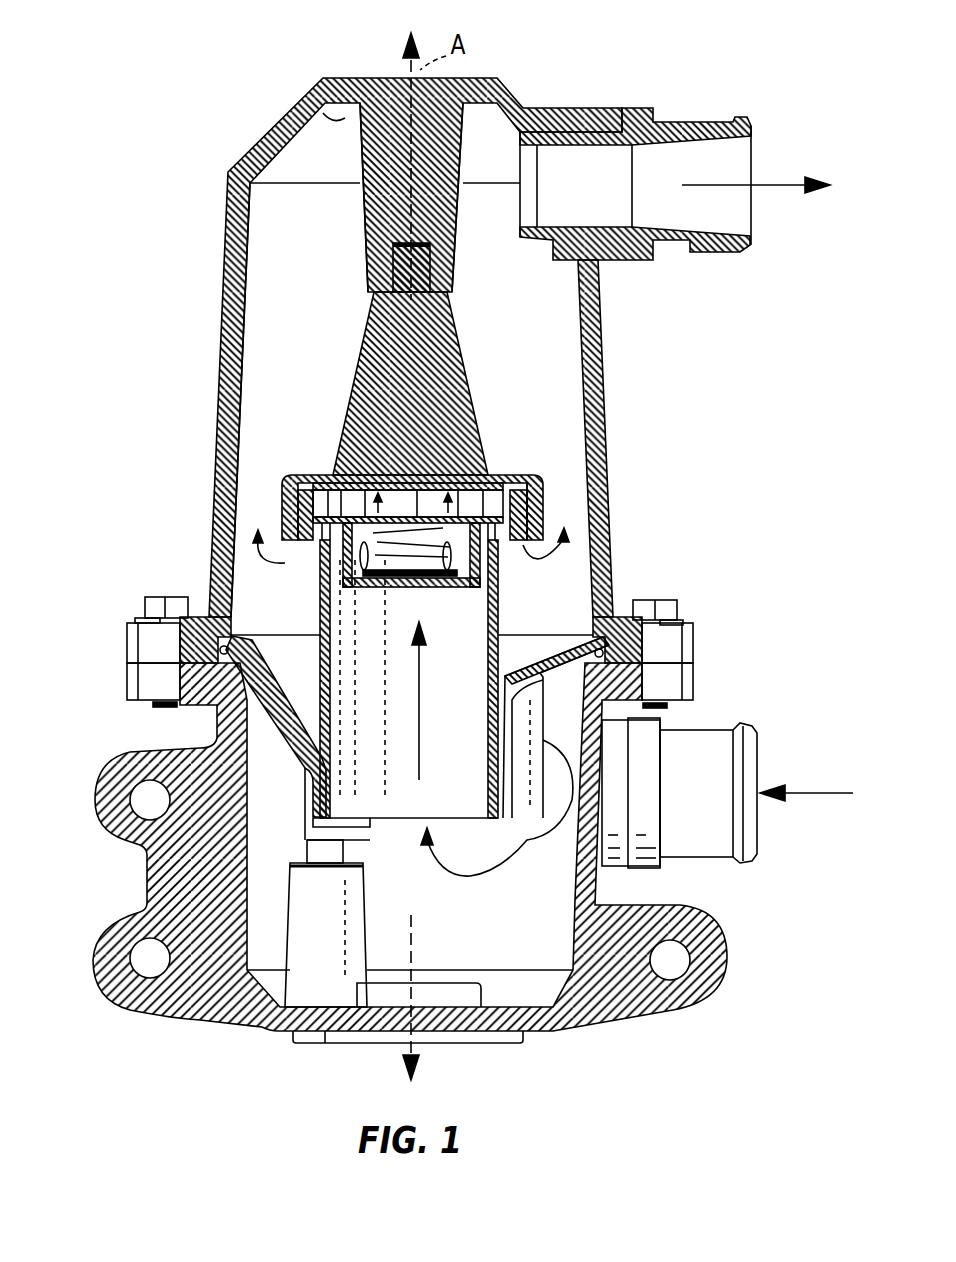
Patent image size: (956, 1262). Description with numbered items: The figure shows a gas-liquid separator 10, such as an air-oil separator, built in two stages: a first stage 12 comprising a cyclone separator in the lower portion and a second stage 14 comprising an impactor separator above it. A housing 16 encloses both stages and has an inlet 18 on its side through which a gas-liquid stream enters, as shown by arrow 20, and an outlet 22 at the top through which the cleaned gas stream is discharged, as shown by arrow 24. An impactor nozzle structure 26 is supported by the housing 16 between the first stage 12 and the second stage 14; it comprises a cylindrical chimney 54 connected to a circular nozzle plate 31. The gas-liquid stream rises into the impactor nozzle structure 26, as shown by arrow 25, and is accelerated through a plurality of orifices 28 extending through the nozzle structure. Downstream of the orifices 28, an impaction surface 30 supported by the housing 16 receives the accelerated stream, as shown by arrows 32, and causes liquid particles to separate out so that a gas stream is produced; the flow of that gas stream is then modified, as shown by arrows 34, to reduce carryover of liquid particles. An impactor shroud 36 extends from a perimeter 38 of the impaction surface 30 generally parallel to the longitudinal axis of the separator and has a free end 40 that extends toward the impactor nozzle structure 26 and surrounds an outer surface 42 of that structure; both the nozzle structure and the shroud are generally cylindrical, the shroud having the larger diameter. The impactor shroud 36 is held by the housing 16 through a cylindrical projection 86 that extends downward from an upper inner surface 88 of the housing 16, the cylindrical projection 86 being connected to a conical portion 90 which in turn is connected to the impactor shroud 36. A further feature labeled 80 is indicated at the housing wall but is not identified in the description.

The gas-liquid separator 10 is at (104, 118).
The first stage 12 is at (116, 881).
The second stage 14 is at (196, 395).
The housing 16 is at (214, 546).
The inlet 18 is at (700, 858).
The arrow 20 is at (807, 793).
The outlet 22 is at (693, 122).
The arrow 24 is at (783, 185).
The arrow 25 is at (423, 702).
The impactor nozzle structure 26 is at (298, 685).
The orifice 28 is at (343, 470).
The impaction surface 30 is at (432, 488).
The circular nozzle plate 31 is at (503, 557).
The arrows 32 is at (385, 493).
The arrows 34 is at (644, 548).
The impactor shroud 36 is at (543, 518).
The perimeter 38 is at (280, 490).
The free end 40 is at (285, 530).
The outer surface 42 is at (500, 607).
The cylindrical chimney 54 is at (330, 625).
The cavity 80 is at (262, 284).
The cylindrical projection 86 is at (365, 207).
The upper inner surface 88 is at (318, 120).
The conical portion 90 is at (460, 344).